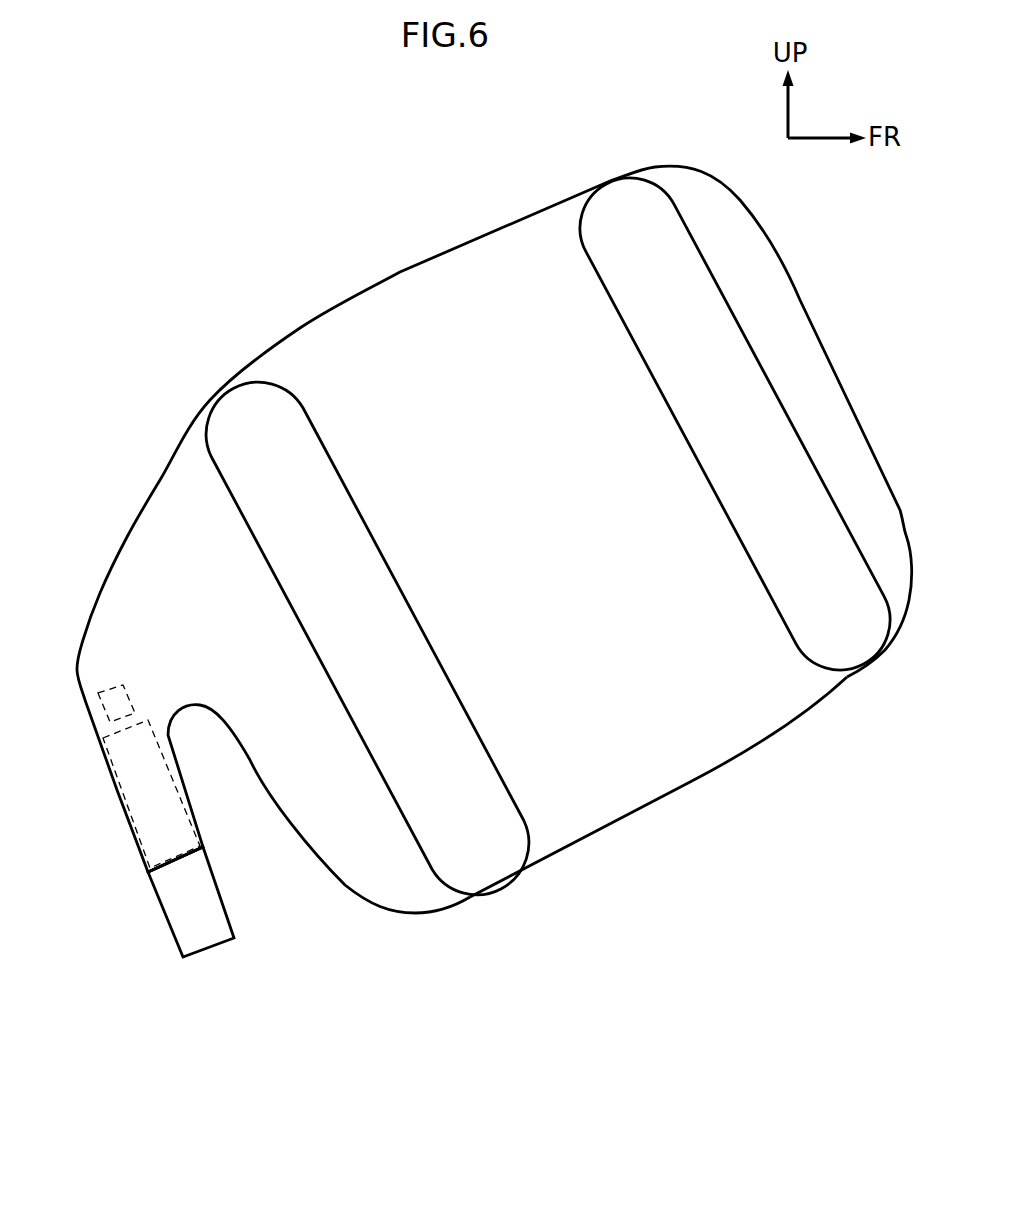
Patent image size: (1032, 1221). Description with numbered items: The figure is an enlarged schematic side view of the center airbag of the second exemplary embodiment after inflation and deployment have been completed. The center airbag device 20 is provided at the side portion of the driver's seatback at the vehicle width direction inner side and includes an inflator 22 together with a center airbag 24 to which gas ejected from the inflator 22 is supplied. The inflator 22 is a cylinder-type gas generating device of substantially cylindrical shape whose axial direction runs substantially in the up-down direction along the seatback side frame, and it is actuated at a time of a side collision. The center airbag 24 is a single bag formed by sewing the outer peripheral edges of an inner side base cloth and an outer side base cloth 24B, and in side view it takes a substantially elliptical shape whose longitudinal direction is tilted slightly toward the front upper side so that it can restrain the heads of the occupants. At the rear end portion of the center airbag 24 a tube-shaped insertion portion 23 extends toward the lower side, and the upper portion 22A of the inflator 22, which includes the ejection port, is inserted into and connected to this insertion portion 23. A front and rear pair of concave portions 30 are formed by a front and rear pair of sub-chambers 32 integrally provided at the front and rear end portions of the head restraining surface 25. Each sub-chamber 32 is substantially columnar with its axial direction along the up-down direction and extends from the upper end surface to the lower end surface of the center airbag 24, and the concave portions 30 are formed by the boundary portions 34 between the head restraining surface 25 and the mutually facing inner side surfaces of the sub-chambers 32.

The center airbag device 20 is at (256, 241).
The inflator 22 is at (161, 909).
The upper portion of the inflator 22A is at (103, 723).
The insertion portion 23 is at (125, 818).
The center airbag 24 is at (388, 273).
The outer side base cloth 24B is at (713, 750).
The head restraining surface 25 is at (598, 690).
The concave portions 30 is at (312, 406).
The sub-chambers 32 is at (775, 447).
The boundary portions 34 is at (667, 420).